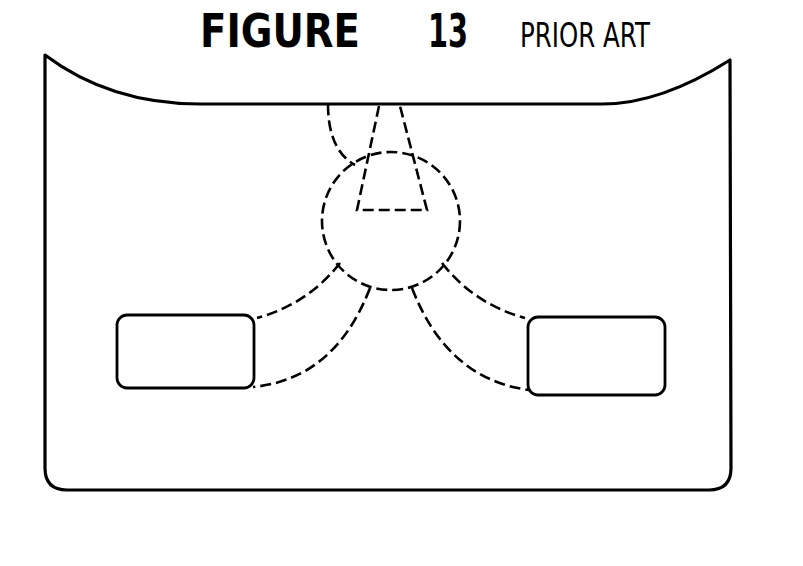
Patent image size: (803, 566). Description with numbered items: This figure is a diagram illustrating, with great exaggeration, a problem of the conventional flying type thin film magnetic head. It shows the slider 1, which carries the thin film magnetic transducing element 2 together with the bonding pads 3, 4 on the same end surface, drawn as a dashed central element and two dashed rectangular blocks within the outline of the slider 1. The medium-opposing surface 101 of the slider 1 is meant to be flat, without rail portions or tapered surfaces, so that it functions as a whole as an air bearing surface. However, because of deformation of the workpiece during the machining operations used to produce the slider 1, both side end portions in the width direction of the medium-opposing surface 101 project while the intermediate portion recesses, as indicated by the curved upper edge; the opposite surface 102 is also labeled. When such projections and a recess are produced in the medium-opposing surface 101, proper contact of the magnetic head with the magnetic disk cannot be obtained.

The slider 1 is at (518, 447).
The thin film magnetic transducing element 2 is at (330, 104).
The bonding pad 3 is at (177, 382).
The bonding pad 4 is at (608, 380).
The medium-opposing surface 101 is at (563, 105).
The housing bottom wall 102 is at (378, 490).